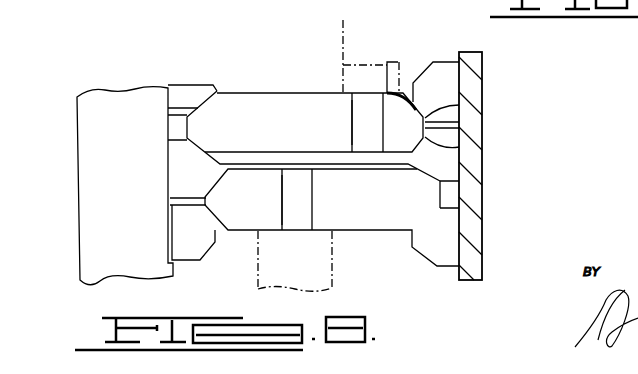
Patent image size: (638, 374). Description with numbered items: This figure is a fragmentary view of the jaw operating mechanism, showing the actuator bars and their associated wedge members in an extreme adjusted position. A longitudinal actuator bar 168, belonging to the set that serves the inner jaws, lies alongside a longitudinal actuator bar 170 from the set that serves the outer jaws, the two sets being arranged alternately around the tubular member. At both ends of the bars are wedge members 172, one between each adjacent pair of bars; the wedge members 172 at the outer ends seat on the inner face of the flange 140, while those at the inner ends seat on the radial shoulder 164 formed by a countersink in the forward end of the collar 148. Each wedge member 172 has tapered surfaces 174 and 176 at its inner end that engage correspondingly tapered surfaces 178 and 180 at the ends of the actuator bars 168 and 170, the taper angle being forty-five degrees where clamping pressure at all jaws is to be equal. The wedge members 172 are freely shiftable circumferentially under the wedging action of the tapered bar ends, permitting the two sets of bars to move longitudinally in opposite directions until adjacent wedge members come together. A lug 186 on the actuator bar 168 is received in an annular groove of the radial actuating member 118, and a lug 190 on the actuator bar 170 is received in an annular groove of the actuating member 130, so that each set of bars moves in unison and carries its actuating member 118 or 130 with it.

The collar 148 is at (90, 104).
The radial shoulder 164 is at (177, 91).
The wedge member 172 is at (199, 83).
The actuator bar 168 is at (265, 107).
The lug 186 is at (357, 125).
The tapered surface 176 is at (388, 64).
The jaw actuator 118 is at (359, 46).
The tapered surface 174 is at (420, 67).
The tapered surface 178 is at (430, 107).
The tapered surface 180 is at (428, 147).
The actuator bar 170 is at (373, 214).
The lug 190 is at (293, 195).
The jaw actuator 130 is at (262, 278).
The flange 140 is at (473, 243).